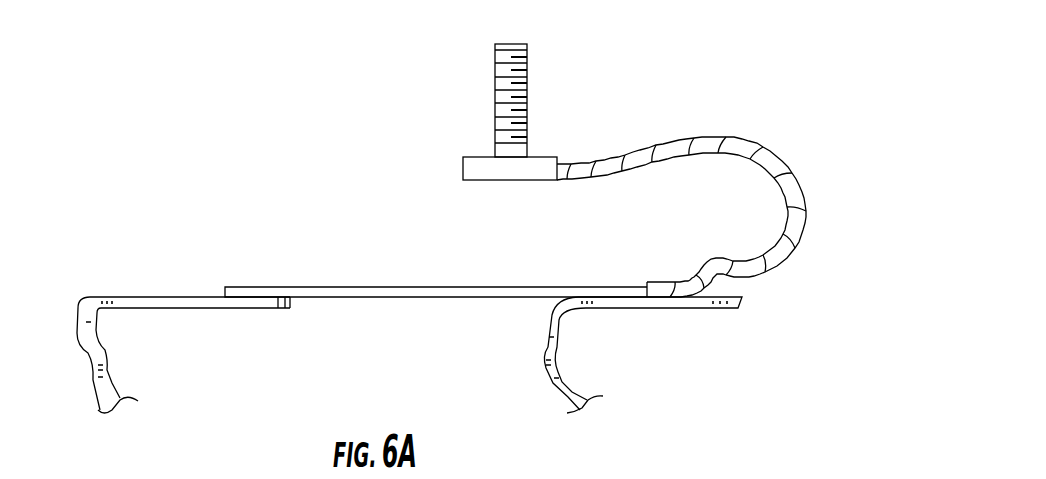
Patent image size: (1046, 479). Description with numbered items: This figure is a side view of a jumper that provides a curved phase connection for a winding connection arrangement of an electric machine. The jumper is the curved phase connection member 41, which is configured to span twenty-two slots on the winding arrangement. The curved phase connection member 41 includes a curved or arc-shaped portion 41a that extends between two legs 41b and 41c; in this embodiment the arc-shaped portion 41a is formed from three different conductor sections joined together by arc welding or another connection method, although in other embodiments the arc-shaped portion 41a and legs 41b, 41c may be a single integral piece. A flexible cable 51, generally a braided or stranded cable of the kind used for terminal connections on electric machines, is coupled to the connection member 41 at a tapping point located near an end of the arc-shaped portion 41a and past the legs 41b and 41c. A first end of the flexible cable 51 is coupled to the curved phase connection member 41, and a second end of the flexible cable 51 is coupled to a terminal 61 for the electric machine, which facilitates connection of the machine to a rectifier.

The terminal 61 is at (495, 97).
The flexible cable 51 is at (706, 136).
The curved phase connection member 41 is at (141, 296).
The arc-shaped portion 41a is at (322, 287).
The leg 41b is at (87, 353).
The leg 41c is at (555, 362).